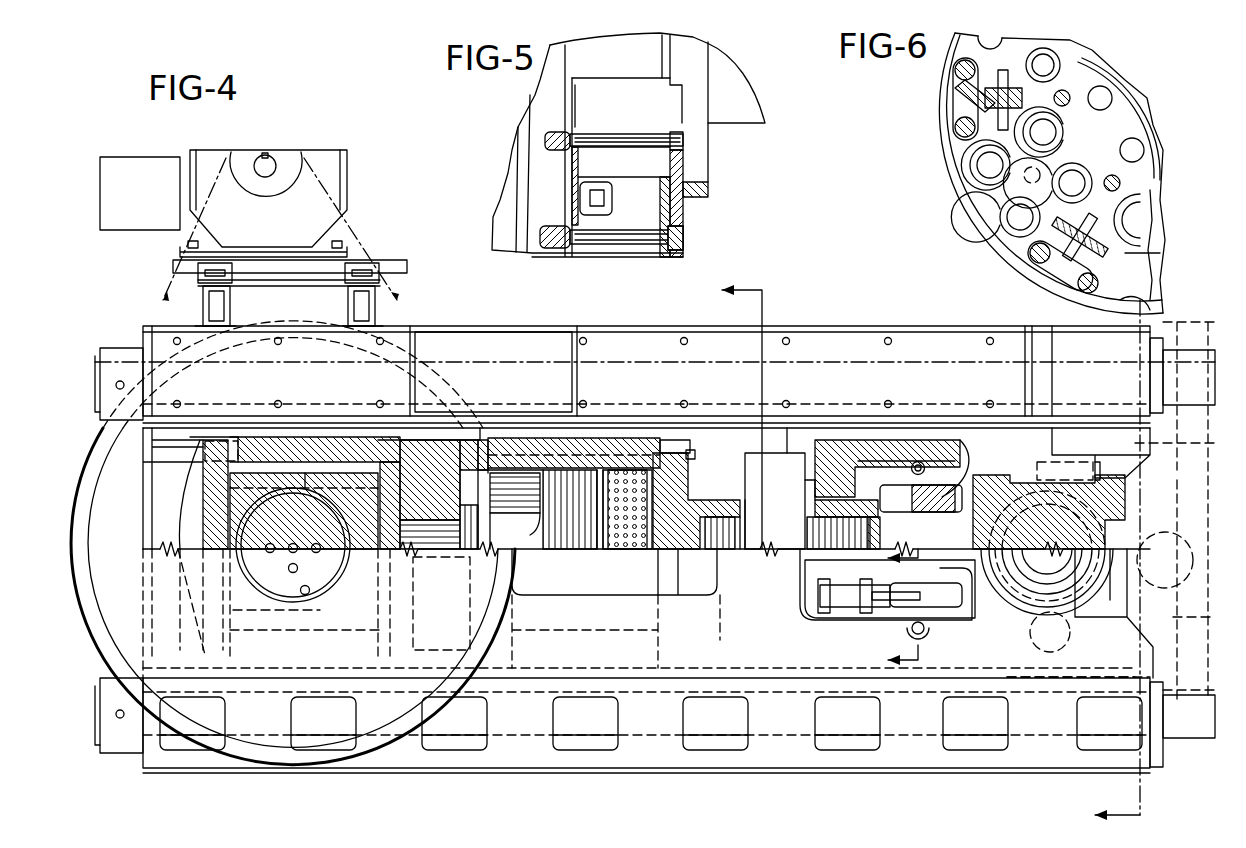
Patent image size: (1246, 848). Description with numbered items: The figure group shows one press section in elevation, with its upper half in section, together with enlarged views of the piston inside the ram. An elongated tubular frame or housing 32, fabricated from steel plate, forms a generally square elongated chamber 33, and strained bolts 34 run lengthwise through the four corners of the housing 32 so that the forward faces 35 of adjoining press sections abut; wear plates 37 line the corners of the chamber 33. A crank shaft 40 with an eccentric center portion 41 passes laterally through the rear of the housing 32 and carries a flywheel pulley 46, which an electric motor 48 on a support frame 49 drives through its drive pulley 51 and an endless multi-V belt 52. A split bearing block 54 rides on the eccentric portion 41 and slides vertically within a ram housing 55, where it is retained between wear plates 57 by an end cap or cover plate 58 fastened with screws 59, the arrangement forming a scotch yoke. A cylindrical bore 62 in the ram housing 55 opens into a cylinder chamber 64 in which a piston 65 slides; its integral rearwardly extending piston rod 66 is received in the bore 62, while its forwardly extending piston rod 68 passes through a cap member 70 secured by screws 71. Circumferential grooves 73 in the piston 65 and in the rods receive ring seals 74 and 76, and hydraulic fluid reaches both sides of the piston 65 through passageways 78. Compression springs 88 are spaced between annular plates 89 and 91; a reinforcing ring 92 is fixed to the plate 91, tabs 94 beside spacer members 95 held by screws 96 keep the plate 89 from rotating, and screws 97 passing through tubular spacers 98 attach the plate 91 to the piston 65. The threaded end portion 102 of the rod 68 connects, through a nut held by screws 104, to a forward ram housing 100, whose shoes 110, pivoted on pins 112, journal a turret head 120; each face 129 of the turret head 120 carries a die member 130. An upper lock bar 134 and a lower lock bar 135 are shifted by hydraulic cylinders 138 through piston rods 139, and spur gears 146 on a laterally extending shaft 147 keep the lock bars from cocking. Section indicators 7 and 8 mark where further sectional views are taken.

In FIG. 4, the section line 7- 7 is at (943, 555).
In FIG. 4, the section line 8- 8 is at (912, 611).
In FIG. 4, the tubular frame or housing 32 is at (608, 326).
In FIG. 4, the elongated chamber 33 is at (438, 430).
In FIG. 4, the strained bolts 34 is at (848, 358).
In FIG. 4, the forward faces 35 is at (1152, 356).
In FIG. 4, the wear plates 37 is at (566, 662).
In FIG. 4, the crank shaft 40 is at (312, 576).
In FIG. 4, the eccentric center portion 41 is at (330, 552).
In FIG. 4, the flywheel pulley 46 is at (78, 506).
In FIG. 4, the electric motor 48 is at (330, 172).
In FIG. 4, the support frame 49 is at (382, 312).
In FIG. 4, the drive pulley 51 is at (278, 152).
In FIG. 4, the endless multi-V belt 52 is at (168, 292).
In FIG. 4, the split bearing block 54 is at (272, 478).
In FIG. 4, the ram housing 55 is at (420, 440).
In FIG. 4, the wear plates 57 is at (225, 500).
In FIG. 4, the end cap or cover plate 58 is at (185, 510).
In FIG. 4, the screws 59 is at (218, 440).
In FIG. 4, the cylindrical bore 62 is at (430, 560).
In FIG. 4, the cylinder chamber 64 is at (513, 470).
In FIG. 4, the piston 65 is at (598, 468).
In FIG. 5, the piston 65 is at (545, 106).
In FIG. 6, the piston 65 is at (960, 145).
In FIG. 4, the rearwardly extending piston rod 66 is at (528, 550).
In FIG. 4, the forwardly extending piston rod 68 is at (786, 534).
In FIG. 5, the forwardly extending piston rod 68 is at (748, 112).
In FIG. 6, the forwardly extending piston rod 68 is at (1150, 116).
In FIG. 4, the cap member 70 is at (674, 498).
In FIG. 4, the screws 71 is at (694, 456).
In FIG. 5, the circumferential grooves 73 is at (515, 253).
In FIG. 4, the ring seals 74 is at (568, 549).
In FIG. 4, the ring seals 76 is at (466, 550).
In FIG. 4, the passageways 78 is at (492, 440).
In FIG. 4, the compression springs 88 is at (646, 478).
In FIG. 6, the compression springs 88 is at (975, 168).
In FIG. 5, the annular plate 89 is at (570, 172).
In FIG. 5, the annular plate 91 is at (686, 171).
In FIG. 6, the annular plate 91 is at (1158, 218).
In FIG. 5, the reinforcing ring 92 is at (710, 192).
In FIG. 6, the reinforcing ring 92 is at (1163, 275).
In FIG. 5, the tabs 94 is at (610, 206).
In FIG. 6, the tabs 94 is at (1008, 90).
In FIG. 5, the spacer members 95 is at (672, 213).
In FIG. 6, the spacer members 95 is at (958, 105).
In FIG. 5, the screws 96 is at (650, 240).
In FIG. 6, the screws 96 is at (955, 73).
In FIG. 5, the screws 97 is at (615, 136).
In FIG. 6, the screws 97 is at (1118, 182).
In FIG. 5, the tubular spacers 98 is at (645, 136).
In FIG. 6, the tubular spacers 98 is at (1064, 98).
In FIG. 4, the forward ram housing 100 is at (814, 562).
In FIG. 4, the threaded end portion 102 is at (830, 546).
In FIG. 4, the screws 104 is at (806, 495).
In FIG. 4, the shoes 110 is at (1088, 602).
In FIG. 4, the pins 112 is at (1040, 638).
In FIG. 4, the turret head 120 is at (993, 500).
In FIG. 4, the face 129 is at (1020, 470).
In FIG. 4, the die member 130 is at (1142, 522).
In FIG. 4, the upper lock bar 134 is at (936, 485).
In FIG. 4, the lower lock bar 135 is at (965, 570).
In FIG. 4, the hydraulic cylinders 138 is at (836, 618).
In FIG. 4, the piston rods 139 is at (876, 607).
In FIG. 4, the spur gears 146 is at (930, 634).
In FIG. 4, the shaft 147 is at (918, 461).